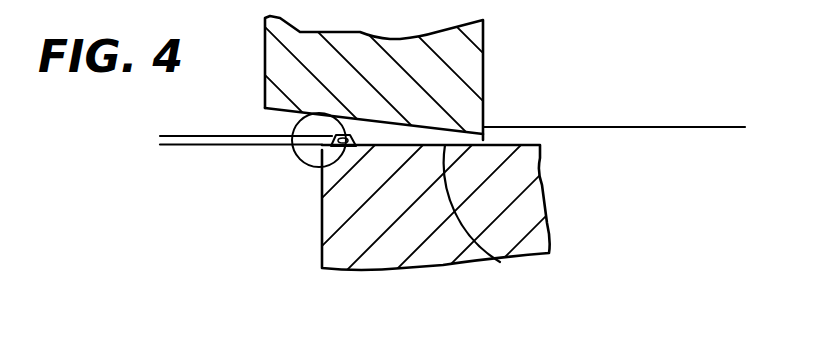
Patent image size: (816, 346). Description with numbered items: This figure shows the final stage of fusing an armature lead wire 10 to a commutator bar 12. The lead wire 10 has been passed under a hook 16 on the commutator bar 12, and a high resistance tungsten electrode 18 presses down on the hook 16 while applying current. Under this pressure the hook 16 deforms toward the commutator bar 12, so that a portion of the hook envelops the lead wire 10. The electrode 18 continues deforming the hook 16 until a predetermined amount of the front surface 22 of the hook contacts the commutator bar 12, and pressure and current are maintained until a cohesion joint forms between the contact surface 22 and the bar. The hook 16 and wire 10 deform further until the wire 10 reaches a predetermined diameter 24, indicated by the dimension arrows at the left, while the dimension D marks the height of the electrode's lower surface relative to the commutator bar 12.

The lead wire 10 is at (327, 144).
The commutator bar 12 is at (543, 195).
The hook 16 is at (486, 131).
The tungsten electrode 18 is at (460, 59).
The front surface of the hook 22 is at (498, 260).
The predetermined diameter of the wire 24 is at (163, 95).
The dimension D is at (728, 222).